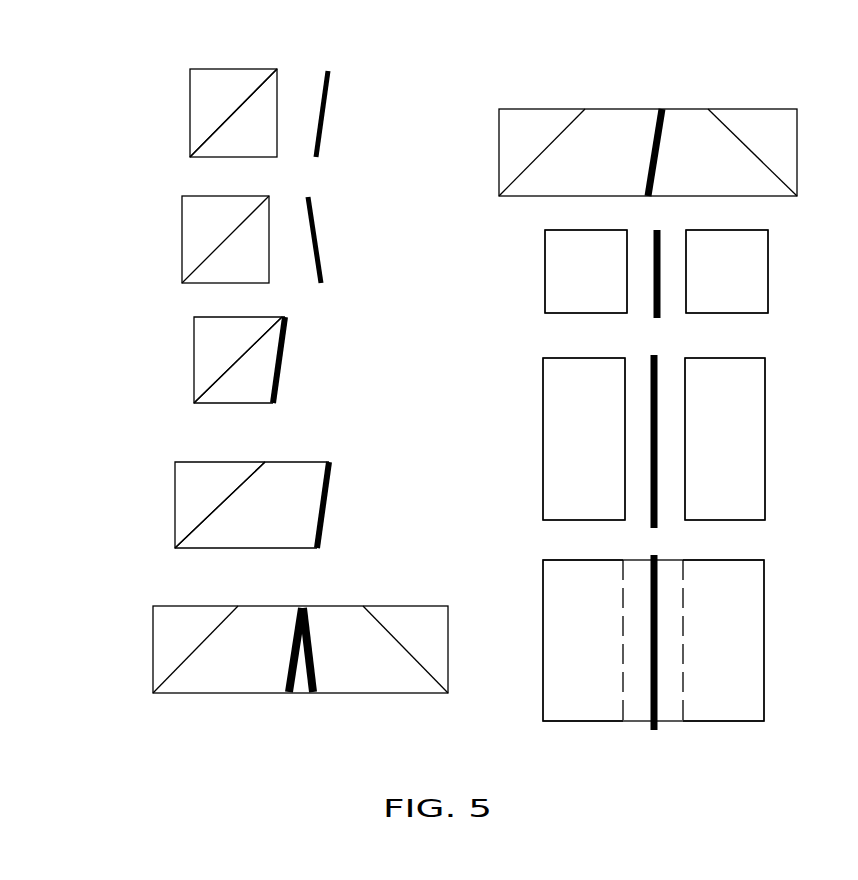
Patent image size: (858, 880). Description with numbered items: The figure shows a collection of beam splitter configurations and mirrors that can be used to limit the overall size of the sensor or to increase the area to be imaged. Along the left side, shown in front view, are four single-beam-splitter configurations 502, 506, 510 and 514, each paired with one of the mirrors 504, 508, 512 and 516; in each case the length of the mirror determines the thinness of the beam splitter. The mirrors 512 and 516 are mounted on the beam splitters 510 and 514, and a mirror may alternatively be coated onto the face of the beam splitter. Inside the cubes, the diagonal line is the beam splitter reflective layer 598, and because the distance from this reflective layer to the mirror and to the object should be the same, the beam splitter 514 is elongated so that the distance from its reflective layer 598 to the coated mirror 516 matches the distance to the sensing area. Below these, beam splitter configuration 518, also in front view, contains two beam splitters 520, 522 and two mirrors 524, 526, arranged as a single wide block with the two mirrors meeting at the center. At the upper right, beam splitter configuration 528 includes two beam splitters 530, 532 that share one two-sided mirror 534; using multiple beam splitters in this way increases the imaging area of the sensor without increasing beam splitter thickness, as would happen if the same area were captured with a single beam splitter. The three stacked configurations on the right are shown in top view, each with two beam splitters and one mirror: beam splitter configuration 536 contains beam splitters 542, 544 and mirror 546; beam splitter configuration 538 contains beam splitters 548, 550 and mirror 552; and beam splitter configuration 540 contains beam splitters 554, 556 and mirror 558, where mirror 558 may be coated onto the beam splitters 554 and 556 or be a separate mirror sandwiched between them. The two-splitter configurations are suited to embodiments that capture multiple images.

The beam splitter configuration 502 is at (190, 122).
The mirror 504 is at (323, 116).
The beam splitter configuration 506 is at (182, 232).
The mirror 508 is at (316, 237).
The beam splitter 510 is at (194, 349).
The mirror 512 is at (283, 362).
The beam splitter 514 is at (175, 490).
The coated mirror 516 is at (325, 503).
The beam splitter configuration 518 is at (369, 599).
The beam splitter 520 is at (397, 695).
The beam splitter 522 is at (213, 695).
The mirror 524 is at (289, 658).
The mirror 526 is at (310, 651).
The beam splitter configuration 528 is at (485, 138).
The beam splitter 530 is at (593, 197).
The beam splitter 532 is at (702, 197).
The two-sided mirror 534 is at (650, 153).
The beam splitter configuration 536 is at (530, 270).
The beam splitter configuration 538 is at (528, 422).
The beam splitter configuration 540 is at (528, 637).
The beam splitter 542 is at (585, 314).
The beam splitter 544 is at (742, 314).
The mirror 546 is at (660, 282).
The beam splitter 548 is at (543, 495).
The beam splitter 550 is at (765, 495).
The mirror 552 is at (657, 495).
The beam splitter 554 is at (597, 722).
The beam splitter 556 is at (738, 722).
The mirror 558 is at (657, 693).
The beam splitter reflective layer 598 is at (233, 112).